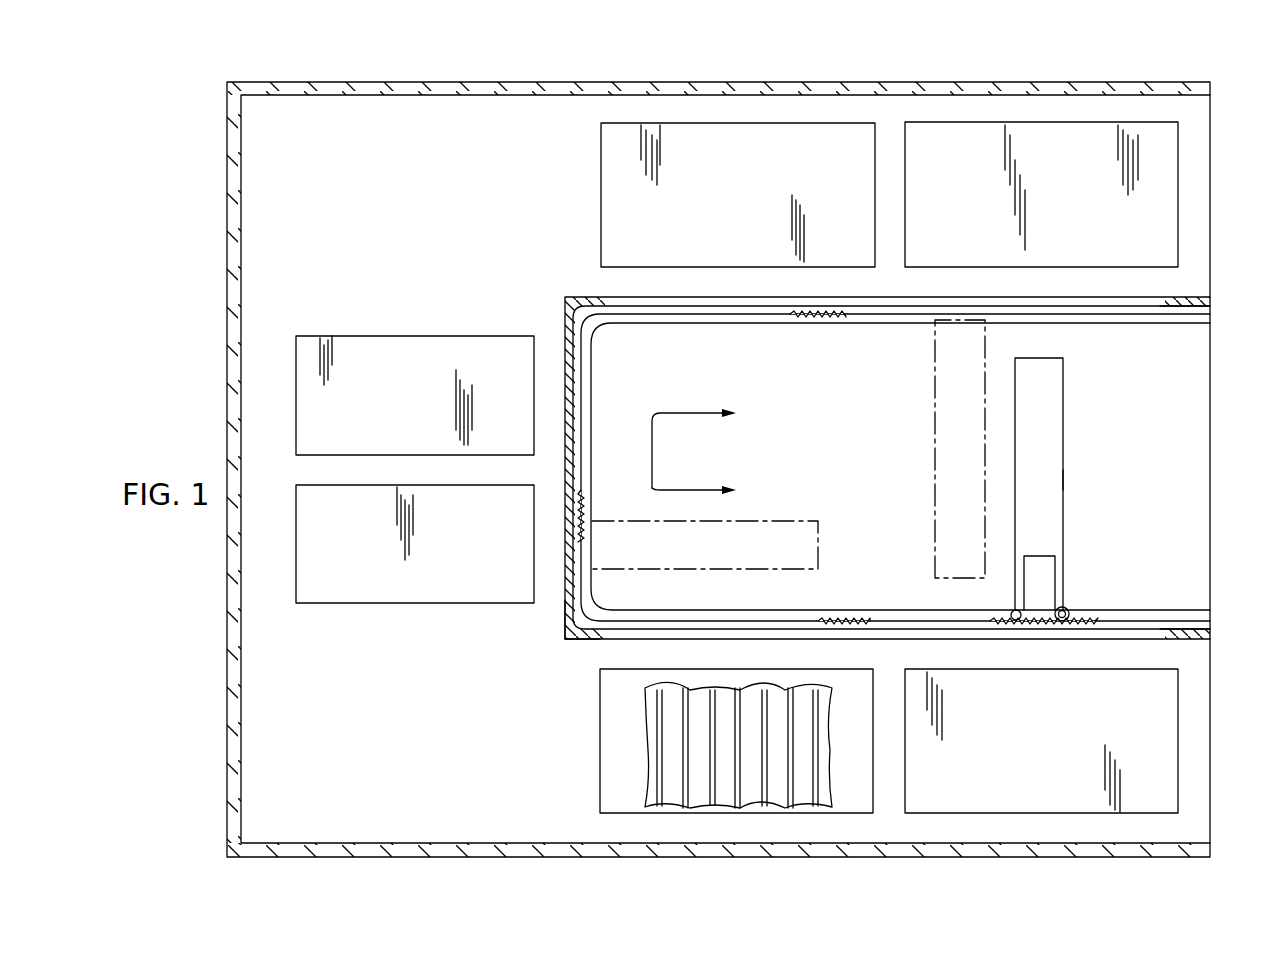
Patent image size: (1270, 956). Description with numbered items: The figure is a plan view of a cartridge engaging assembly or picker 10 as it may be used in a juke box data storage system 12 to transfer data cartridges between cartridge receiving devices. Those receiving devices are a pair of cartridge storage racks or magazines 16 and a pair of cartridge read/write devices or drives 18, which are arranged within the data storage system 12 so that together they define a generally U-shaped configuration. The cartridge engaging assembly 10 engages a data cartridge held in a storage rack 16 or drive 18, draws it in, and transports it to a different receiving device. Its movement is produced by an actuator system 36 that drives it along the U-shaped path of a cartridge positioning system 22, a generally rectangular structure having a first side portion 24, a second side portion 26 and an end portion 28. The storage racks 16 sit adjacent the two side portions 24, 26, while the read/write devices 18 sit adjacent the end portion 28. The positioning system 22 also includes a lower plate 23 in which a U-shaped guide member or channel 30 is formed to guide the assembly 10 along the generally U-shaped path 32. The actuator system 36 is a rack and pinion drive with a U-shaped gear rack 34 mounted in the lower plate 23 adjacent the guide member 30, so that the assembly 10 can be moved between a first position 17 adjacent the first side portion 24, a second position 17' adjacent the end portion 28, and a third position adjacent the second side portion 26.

The cartridge engaging assembly 10 is at (1072, 481).
The data storage system 12 is at (343, 84).
The cartridge storage racks 16 is at (927, 123).
The first position 17 is at (1074, 484).
The second position 17' is at (720, 526).
The cartridge read/write devices 18 is at (328, 485).
The cartridge positioning system 22 is at (1180, 607).
The lower plate 23 is at (810, 378).
The first side portion 24 is at (1152, 637).
The second side portion 26 is at (1152, 297).
The end portion 28 is at (566, 620).
The U-shaped guide member 30 is at (592, 376).
The U-shaped path 32 is at (652, 455).
The U-shaped gear rack 34 is at (858, 614).
The actuator system 36 is at (1066, 606).